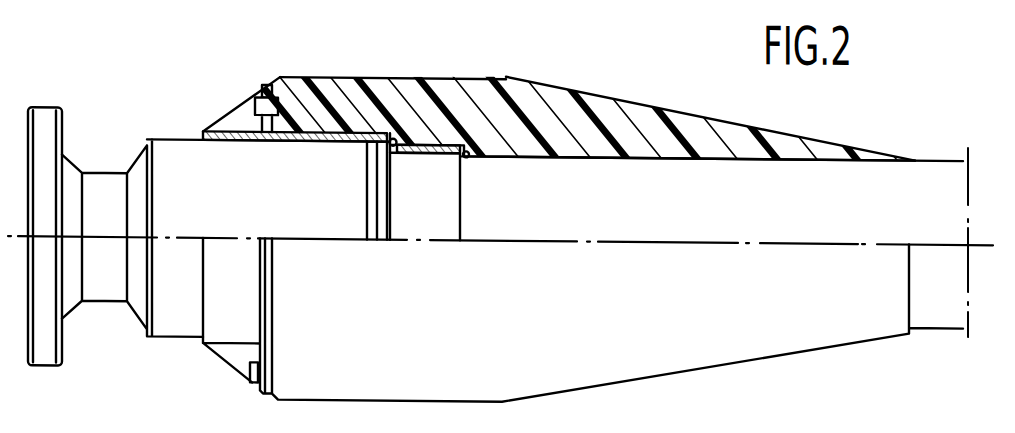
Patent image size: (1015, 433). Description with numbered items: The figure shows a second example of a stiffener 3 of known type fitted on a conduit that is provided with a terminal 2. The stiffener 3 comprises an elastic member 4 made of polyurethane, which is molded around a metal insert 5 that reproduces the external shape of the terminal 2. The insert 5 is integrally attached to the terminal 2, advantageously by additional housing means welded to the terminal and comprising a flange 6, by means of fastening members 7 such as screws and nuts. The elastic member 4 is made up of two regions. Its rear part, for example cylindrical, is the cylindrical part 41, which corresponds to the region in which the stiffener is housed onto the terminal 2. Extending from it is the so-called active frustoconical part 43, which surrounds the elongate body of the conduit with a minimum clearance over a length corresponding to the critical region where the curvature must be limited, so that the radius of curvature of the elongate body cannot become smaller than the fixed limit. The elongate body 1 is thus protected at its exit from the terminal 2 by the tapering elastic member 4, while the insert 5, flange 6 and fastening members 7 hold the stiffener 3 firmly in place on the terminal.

The inner tube 1 is at (943, 152).
The terminal 2 is at (173, 128).
The stiffener 3 is at (609, 90).
The elastic member 4 is at (609, 101).
The cylindrical part 41 is at (445, 74).
The active frustoconical part 43 is at (737, 117).
The metal insert 5 is at (370, 125).
The flange 6 is at (223, 128).
The fastening members 7 is at (240, 96).